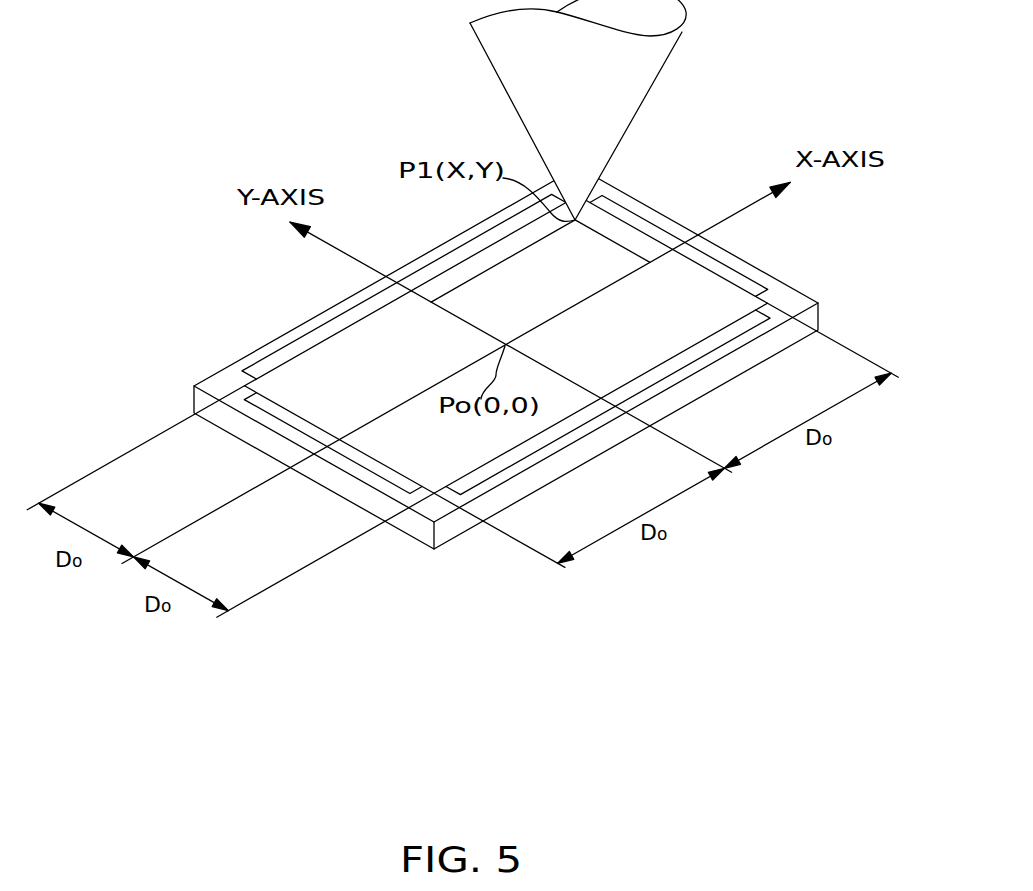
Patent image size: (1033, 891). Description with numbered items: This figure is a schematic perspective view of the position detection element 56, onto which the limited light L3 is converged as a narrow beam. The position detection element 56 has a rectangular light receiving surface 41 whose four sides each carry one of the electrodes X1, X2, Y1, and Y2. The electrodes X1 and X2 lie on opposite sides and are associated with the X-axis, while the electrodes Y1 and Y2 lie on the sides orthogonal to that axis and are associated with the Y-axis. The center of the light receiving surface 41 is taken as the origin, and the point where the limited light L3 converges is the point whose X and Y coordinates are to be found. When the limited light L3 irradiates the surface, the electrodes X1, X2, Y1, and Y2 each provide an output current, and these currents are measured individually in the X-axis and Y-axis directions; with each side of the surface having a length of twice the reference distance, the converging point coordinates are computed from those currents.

The position detection element 56 is at (408, 565).
The light receiving surface 41 is at (300, 360).
The limited light L3 is at (653, 50).
The electrode X1 is at (277, 415).
The electrode X2 is at (745, 283).
The electrode Y1 is at (492, 233).
The electrode Y2 is at (480, 470).